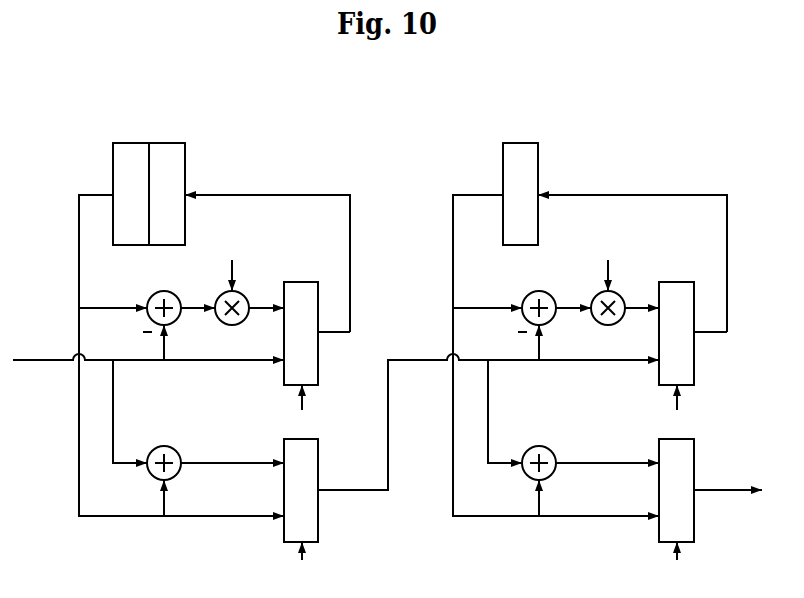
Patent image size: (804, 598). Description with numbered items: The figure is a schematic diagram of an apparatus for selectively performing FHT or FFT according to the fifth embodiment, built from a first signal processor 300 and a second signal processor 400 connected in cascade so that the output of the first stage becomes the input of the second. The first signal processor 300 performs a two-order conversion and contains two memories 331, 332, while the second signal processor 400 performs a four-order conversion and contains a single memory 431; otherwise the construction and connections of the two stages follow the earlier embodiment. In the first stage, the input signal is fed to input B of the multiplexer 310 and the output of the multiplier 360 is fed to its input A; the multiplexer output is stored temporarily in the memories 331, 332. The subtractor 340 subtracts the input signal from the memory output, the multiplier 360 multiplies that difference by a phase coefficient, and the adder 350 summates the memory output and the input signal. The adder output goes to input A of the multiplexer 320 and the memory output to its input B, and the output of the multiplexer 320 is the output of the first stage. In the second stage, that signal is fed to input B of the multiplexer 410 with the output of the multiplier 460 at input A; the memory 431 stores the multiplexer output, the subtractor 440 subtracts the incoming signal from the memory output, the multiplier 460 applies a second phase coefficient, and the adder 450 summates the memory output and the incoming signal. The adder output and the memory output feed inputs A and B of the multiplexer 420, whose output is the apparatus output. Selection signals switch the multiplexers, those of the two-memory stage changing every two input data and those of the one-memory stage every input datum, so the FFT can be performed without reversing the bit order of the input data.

The first signal processor 300 is at (284, 136).
The multiplexer 310 is at (300, 282).
The multiplexer 320 is at (318, 515).
The memory 331 is at (133, 143).
The memory 332 is at (176, 143).
The subtractor 340 is at (168, 292).
The adder 350 is at (168, 446).
The multiplier 360 is at (241, 293).
The second signal processor 400 is at (659, 136).
The multiplexer 410 is at (675, 282).
The multiplexer 420 is at (694, 515).
The memory 431 is at (522, 143).
The subtractor 440 is at (543, 292).
The adder 450 is at (543, 446).
The multiplier 460 is at (617, 293).